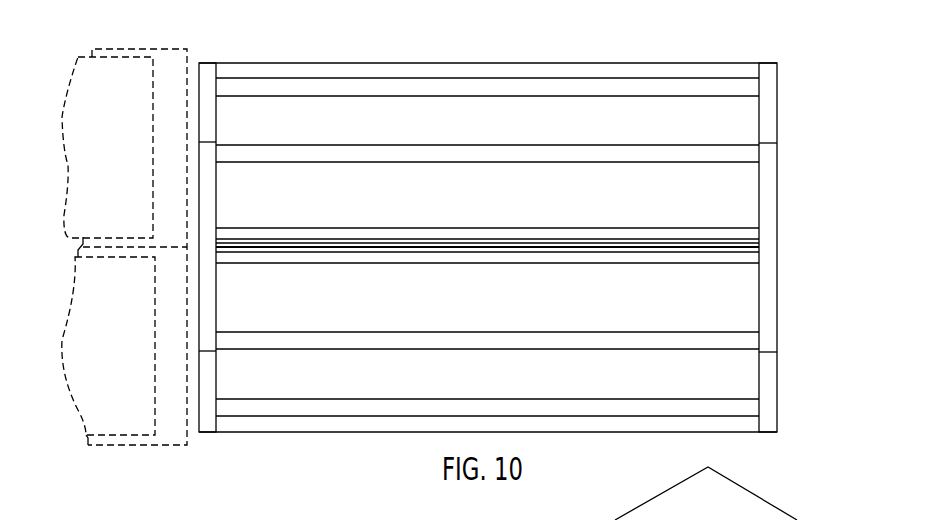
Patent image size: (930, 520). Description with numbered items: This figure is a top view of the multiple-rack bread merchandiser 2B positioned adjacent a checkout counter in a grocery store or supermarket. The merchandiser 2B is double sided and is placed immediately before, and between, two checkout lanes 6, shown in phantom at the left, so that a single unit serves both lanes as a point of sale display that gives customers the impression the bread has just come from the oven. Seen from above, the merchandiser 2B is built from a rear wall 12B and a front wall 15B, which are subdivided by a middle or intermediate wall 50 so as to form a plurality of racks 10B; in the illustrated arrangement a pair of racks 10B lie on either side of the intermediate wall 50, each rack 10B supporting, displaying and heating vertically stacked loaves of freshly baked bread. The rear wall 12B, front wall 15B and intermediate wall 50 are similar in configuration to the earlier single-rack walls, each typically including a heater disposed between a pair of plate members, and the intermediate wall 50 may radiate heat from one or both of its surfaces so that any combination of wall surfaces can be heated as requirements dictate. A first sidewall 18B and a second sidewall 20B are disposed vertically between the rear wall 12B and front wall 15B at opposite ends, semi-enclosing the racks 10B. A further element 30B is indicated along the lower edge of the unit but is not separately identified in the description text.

The merchandiser 2B is at (793, 45).
The checkout lanes 6 is at (129, 70).
The racks 10B is at (294, 373).
The rear wall 12B is at (261, 281).
The front wall 15B is at (586, 66).
The first sidewall 18B is at (200, 300).
The second sidewall 20B is at (778, 305).
The bottom edge member 30B is at (362, 447).
The intermediate wall 50 is at (582, 132).